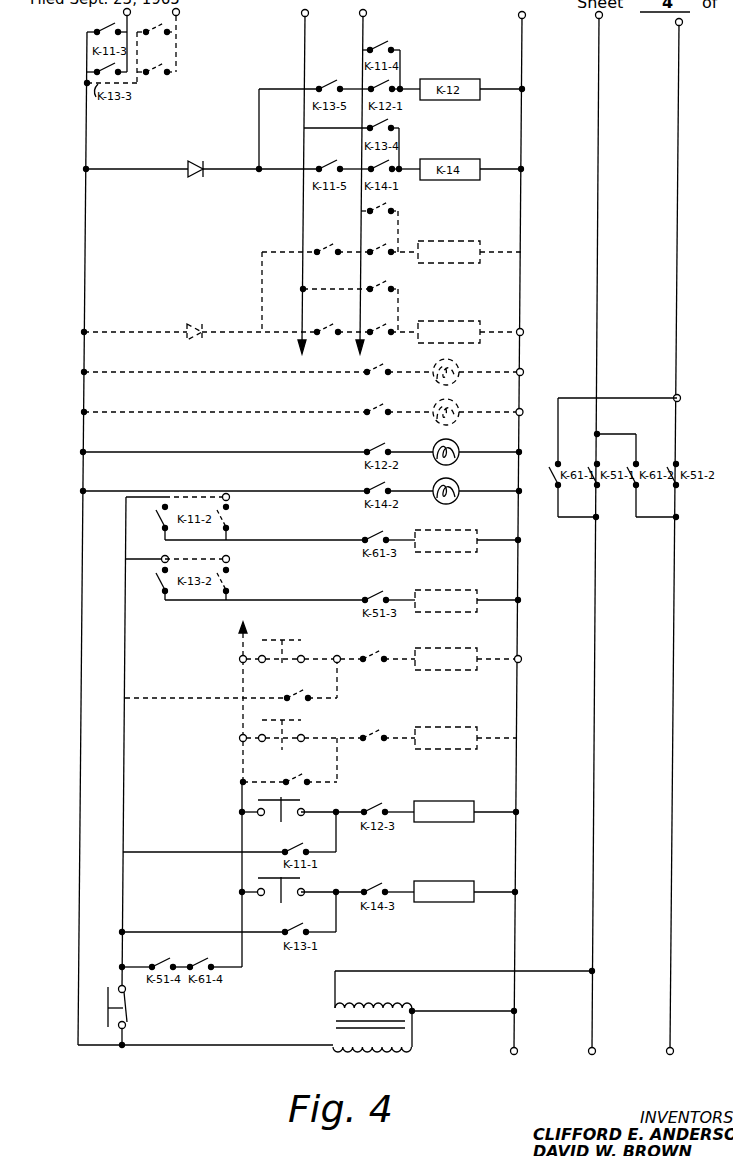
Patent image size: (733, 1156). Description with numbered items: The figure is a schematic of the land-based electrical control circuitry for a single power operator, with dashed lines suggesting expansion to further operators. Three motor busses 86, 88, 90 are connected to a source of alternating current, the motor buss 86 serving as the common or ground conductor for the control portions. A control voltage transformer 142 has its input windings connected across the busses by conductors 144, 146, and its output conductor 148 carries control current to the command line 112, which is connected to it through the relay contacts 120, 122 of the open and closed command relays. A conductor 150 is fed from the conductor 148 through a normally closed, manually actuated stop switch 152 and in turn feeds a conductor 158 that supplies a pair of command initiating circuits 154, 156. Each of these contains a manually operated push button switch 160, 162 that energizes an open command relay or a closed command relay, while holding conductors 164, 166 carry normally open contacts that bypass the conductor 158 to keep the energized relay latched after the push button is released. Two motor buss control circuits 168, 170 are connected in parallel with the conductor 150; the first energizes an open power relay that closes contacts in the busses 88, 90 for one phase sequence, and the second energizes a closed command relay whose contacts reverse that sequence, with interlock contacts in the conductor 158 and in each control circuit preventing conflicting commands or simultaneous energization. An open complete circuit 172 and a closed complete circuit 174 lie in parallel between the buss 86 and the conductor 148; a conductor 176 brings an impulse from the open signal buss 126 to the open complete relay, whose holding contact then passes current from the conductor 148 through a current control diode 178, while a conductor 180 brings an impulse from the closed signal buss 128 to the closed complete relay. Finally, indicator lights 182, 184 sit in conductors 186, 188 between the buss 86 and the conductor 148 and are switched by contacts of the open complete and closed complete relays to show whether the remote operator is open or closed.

The motor buss 86 is at (521, 30).
The motor buss 88 is at (597, 232).
The motor buss 90 is at (677, 220).
The command line 112 is at (123, 13).
The relay contact K-11-3 120 is at (95, 29).
The relay contact K-13-3 122 is at (95, 68).
The open signal buss 126 is at (366, 40).
The closed signal buss 128 is at (308, 46).
The control voltage transformer 142 is at (336, 1014).
The conductor 144 is at (492, 1012).
The conductor 146 is at (482, 971).
The output conductor 148 is at (83, 620).
The conductor 150 is at (124, 718).
The stop switch 152 is at (126, 994).
The command initiating circuit 154 is at (344, 808).
The command initiating circuit 156 is at (344, 890).
The conductor 158 is at (243, 950).
The push button switch 160 is at (296, 799).
The push button switch 162 is at (272, 866).
The conductor 164 is at (158, 851).
The conductor 166 is at (156, 931).
The motor buss control circuit 168 is at (406, 523).
The motor buss control circuit 170 is at (404, 583).
The open complete circuit 172 is at (285, 89).
The closed complete circuit 174 is at (283, 170).
The conductor 176 is at (402, 88).
The current control diode 178 is at (185, 166).
The conductor 180 is at (406, 162).
The indicator light 182 is at (467, 444).
The indicator light 184 is at (469, 482).
The conductor 186 is at (220, 453).
The conductor 188 is at (258, 494).